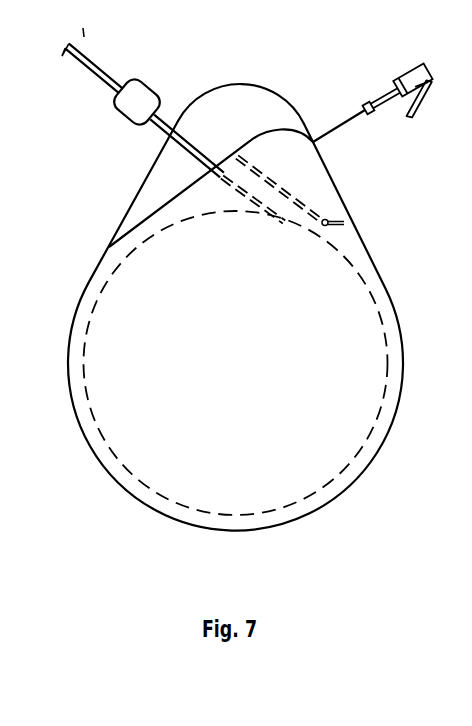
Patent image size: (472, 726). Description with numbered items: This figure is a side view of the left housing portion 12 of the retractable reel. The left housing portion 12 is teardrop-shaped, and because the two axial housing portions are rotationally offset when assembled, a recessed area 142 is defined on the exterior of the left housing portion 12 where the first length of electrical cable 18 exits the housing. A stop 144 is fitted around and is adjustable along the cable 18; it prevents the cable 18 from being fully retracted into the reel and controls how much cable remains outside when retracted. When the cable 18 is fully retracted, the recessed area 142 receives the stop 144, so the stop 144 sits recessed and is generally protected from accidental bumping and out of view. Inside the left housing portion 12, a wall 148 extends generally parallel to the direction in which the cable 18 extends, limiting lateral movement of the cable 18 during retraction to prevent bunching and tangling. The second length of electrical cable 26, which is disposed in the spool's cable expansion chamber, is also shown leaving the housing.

The left housing portion 12 is at (118, 485).
The first length of electrical cable 18 is at (93, 62).
The second length of electrical cable 26 is at (343, 122).
The recessed area 142 is at (175, 182).
The stop 144 is at (132, 104).
The wall 148 is at (300, 203).